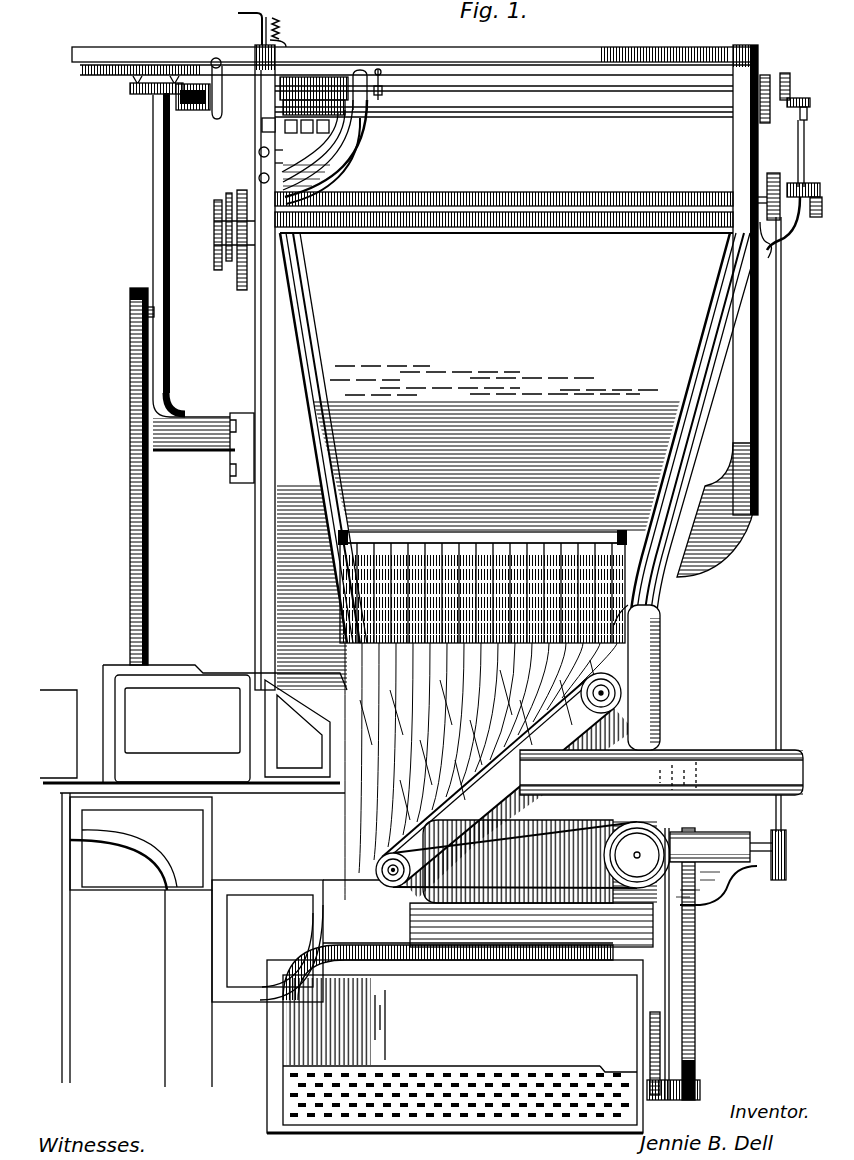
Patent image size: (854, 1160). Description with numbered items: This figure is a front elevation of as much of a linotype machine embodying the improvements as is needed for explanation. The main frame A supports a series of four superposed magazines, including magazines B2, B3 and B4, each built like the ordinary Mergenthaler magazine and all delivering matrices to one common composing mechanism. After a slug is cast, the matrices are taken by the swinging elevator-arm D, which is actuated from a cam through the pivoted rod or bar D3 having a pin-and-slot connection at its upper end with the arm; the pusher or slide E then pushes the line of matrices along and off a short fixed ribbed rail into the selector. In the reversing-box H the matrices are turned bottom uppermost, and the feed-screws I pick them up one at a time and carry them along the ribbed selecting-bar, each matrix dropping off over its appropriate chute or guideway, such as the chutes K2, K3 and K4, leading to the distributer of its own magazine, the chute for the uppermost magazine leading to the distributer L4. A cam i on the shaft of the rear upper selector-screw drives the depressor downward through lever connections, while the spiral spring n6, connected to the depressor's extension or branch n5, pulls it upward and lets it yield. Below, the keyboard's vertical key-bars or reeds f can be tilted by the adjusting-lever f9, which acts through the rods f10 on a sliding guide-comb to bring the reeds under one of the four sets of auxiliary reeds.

The main frame A is at (753, 270).
The magazine B2 is at (720, 352).
The magazine B3 is at (710, 323).
The magazine B4 is at (480, 438).
The swinging elevator-arm D is at (170, 177).
The pivoted rod or bar D3 is at (150, 560).
The pusher or slide E is at (226, 60).
The reversing-box H is at (197, 104).
The feed-screws I is at (315, 76).
The cam i is at (380, 100).
The chute or guideway K2 is at (333, 167).
The chute or guideway K3 is at (273, 157).
The chute or guideway K4 is at (270, 125).
The distributer L4 is at (450, 197).
The vertical key-bars or reeds f is at (590, 962).
The adjusting-lever f9 is at (660, 1020).
The rod f10 is at (670, 944).
The extension or branch n5 is at (239, 24).
The spiral spring n6 is at (284, 27).